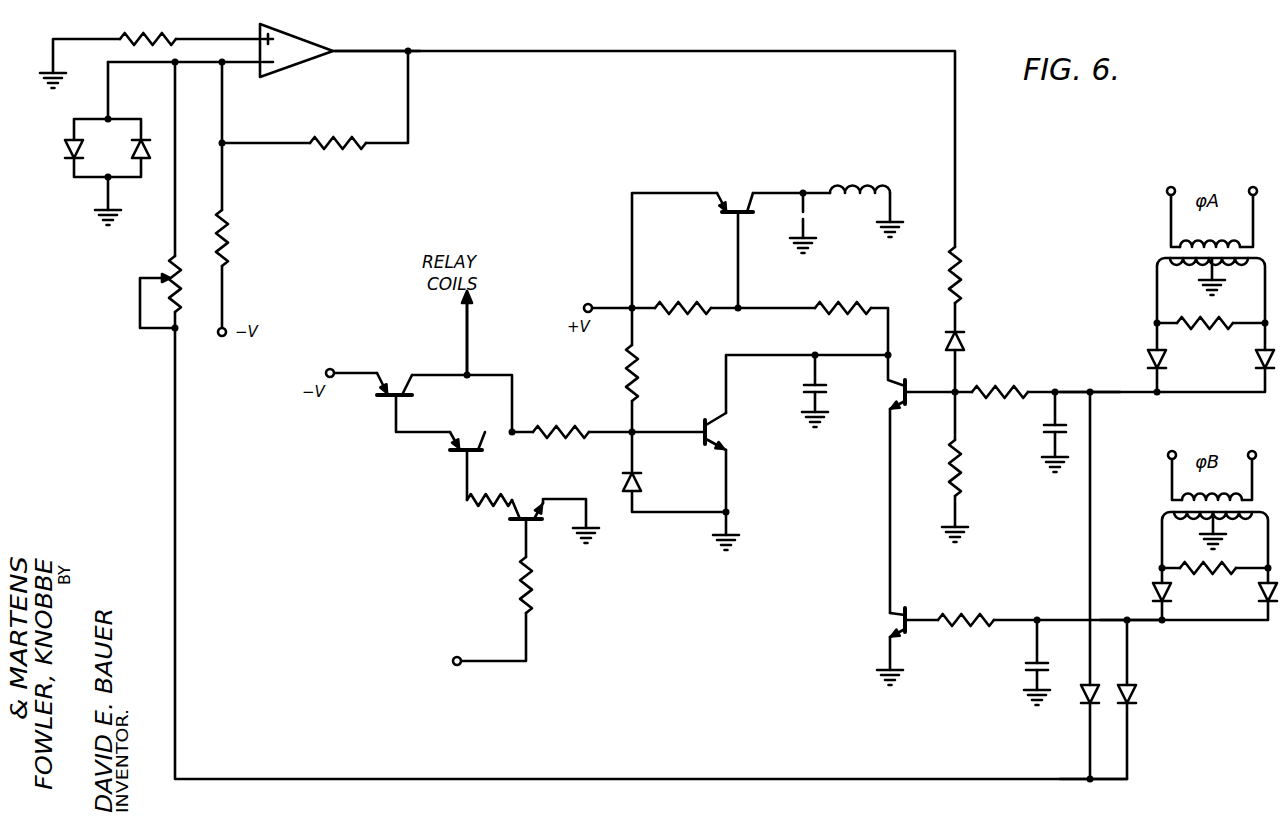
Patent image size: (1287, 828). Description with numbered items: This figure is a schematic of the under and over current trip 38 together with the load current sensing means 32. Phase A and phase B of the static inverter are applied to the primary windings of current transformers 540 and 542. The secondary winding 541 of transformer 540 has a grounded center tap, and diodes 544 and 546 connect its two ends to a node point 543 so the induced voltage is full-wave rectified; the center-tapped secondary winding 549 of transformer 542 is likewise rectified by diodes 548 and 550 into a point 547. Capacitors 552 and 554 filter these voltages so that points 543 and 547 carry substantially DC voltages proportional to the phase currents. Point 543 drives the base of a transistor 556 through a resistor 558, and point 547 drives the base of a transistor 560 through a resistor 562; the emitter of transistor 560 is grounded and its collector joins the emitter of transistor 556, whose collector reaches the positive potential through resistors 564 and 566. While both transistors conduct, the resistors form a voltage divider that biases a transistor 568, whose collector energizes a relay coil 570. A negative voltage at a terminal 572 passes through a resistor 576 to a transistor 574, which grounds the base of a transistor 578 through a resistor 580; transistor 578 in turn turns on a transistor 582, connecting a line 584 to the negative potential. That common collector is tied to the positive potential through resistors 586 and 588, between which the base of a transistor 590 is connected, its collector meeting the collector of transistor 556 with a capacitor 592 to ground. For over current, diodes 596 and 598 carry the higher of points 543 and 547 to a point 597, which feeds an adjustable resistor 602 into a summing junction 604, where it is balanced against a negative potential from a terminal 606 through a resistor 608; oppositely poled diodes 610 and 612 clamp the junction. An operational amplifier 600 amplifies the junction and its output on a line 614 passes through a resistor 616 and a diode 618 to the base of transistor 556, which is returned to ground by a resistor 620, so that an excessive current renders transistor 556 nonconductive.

The operational amplifier 600 is at (286, 27).
The line 614 is at (357, 50).
The summing junction 604 is at (170, 63).
The diode 610 is at (62, 147).
The diode 612 is at (134, 146).
The adjustable resistor 602 is at (170, 258).
The resistor 608 is at (229, 236).
The terminal 606 is at (220, 337).
The line 584 is at (465, 338).
The transistor 582 is at (391, 370).
The transistor 578 is at (448, 442).
The resistor 586 is at (570, 425).
The transistor 574 is at (503, 503).
The resistor 580 is at (507, 512).
The resistor 576 is at (533, 593).
The terminal 572 is at (470, 640).
The transistor 590 is at (641, 482).
The resistor 588 is at (636, 368).
The resistor 566 is at (700, 302).
The resistor 564 is at (833, 302).
The transistor 568 is at (733, 190).
The relay coil 570 is at (855, 188).
The capacitor 592 is at (804, 389).
The transistor 556 is at (889, 404).
The transistor 560 is at (890, 613).
The resistor 616 is at (962, 276).
The diode 618 is at (963, 344).
The resistor 620 is at (963, 480).
The resistor 558 is at (980, 392).
The node point 543 is at (1090, 392).
The capacitor 552 is at (1044, 429).
The resistor 562 is at (966, 614).
The capacitor 554 is at (1026, 668).
The point 547 is at (1130, 622).
The diode 596 is at (1083, 692).
The diode 598 is at (1136, 693).
The point 597 is at (1090, 780).
The current transformer 540 is at (1165, 250).
The secondary winding 541 is at (1233, 276).
The diode 544 is at (1147, 358).
The diode 546 is at (1258, 362).
The current transformer 542 is at (1167, 508).
The transformer phase B secondary 549 is at (1227, 528).
The diode 548 is at (1153, 597).
The diode 550 is at (1258, 592).
The load current sensing means 32 is at (1069, 219).
The under and over current trip 38 is at (678, 649).